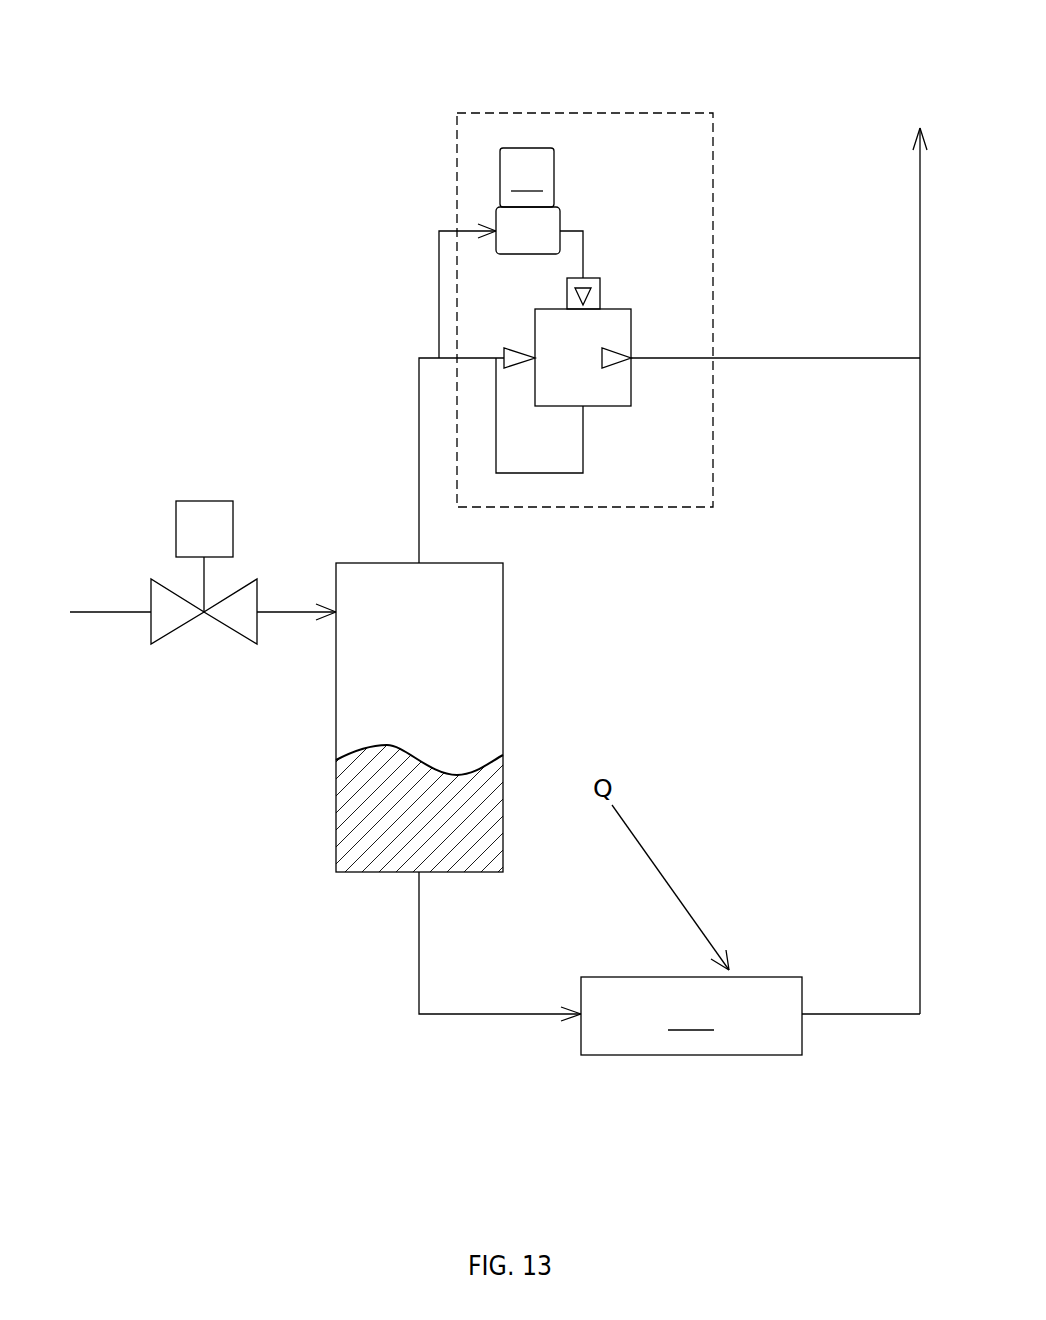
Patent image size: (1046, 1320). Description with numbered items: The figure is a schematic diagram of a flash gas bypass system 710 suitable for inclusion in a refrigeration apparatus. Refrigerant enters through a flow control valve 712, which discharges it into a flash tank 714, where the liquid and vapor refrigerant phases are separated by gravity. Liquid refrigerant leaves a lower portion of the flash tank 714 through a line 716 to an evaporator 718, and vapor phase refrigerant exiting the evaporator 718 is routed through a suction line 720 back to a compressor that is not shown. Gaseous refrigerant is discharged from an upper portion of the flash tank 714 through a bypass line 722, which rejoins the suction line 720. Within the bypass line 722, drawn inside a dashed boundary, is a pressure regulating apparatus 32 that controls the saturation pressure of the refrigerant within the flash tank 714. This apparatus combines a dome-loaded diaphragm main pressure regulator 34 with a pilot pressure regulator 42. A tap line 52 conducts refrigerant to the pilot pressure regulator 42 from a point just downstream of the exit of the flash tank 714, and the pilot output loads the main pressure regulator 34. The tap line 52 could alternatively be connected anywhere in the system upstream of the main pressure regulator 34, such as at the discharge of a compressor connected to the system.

The flash gas bypass system 710 is at (607, 69).
The pressure regulating apparatus 32 is at (713, 161).
The pilot pressure regulator 42 is at (528, 201).
The tap line 52 is at (439, 294).
The main pressure regulator 34 is at (612, 316).
The bypass line 722 is at (419, 437).
The suction line 720 is at (920, 636).
The flow control valve 712 is at (166, 625).
The flash tank 714 is at (505, 619).
The line 716 is at (472, 1016).
The evaporator 718 is at (750, 1016).